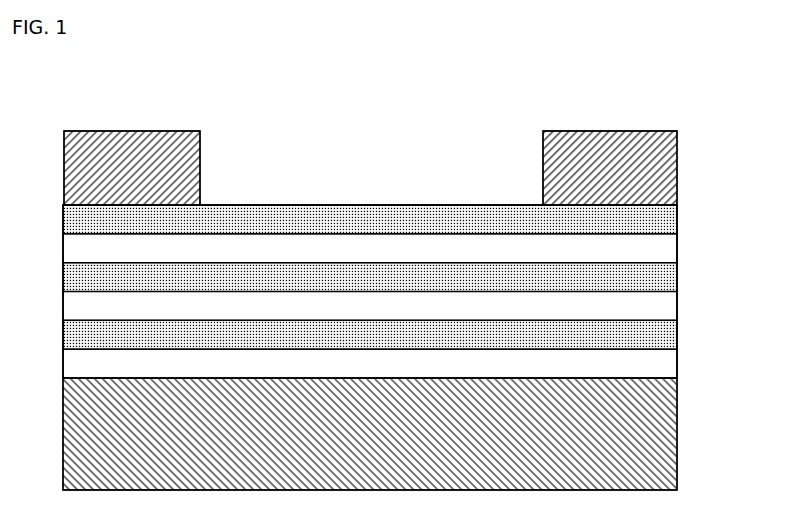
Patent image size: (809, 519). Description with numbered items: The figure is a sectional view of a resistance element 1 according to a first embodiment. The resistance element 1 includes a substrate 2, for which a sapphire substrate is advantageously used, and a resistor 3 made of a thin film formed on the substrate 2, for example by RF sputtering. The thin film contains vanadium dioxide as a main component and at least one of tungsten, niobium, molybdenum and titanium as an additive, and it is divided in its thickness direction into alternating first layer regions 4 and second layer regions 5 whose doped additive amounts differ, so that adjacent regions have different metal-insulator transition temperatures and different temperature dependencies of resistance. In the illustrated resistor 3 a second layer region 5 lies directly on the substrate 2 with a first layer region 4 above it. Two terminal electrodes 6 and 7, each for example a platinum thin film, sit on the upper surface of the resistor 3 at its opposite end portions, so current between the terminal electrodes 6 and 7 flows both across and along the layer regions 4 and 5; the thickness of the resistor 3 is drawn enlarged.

The resistance element 1 is at (293, 116).
The substrate 2 is at (668, 420).
The resistor 3 is at (737, 207).
The first layer region 4 is at (673, 221).
The second layer region 5 is at (673, 250).
The terminal electrode 6 is at (127, 140).
The terminal electrode 7 is at (588, 130).